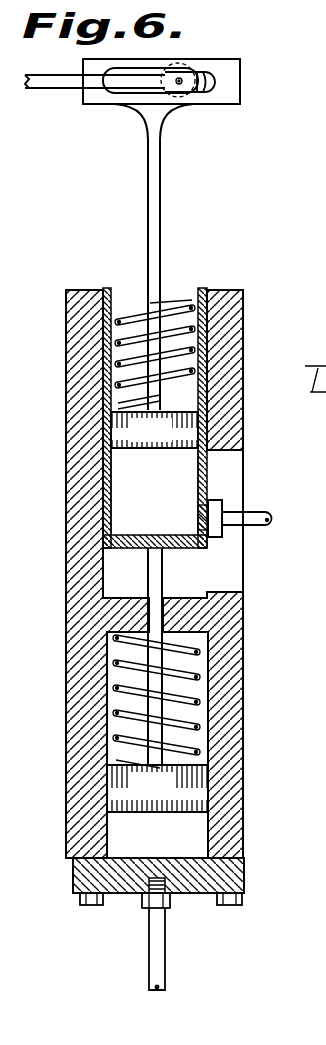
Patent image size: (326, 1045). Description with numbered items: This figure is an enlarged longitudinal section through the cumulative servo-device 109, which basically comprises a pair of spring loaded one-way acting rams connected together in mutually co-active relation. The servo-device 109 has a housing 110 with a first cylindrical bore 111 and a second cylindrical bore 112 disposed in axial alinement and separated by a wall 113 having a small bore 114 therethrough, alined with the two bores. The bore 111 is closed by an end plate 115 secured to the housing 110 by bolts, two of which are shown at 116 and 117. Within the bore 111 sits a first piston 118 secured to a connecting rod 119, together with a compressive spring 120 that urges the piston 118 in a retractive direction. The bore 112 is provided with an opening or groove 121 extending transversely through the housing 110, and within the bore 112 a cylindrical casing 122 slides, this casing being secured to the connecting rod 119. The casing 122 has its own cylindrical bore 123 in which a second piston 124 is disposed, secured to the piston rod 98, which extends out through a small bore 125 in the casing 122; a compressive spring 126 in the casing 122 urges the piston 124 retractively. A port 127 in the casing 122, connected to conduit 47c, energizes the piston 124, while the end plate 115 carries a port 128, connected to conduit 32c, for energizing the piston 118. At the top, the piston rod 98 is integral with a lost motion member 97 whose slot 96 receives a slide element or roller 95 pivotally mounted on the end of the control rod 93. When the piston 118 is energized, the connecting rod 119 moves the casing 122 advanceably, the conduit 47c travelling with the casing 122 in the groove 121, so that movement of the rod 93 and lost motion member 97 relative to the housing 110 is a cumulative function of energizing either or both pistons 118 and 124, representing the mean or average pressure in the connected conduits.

The control rod 93 is at (58, 88).
The slide element or roller 95 is at (193, 103).
The slot 96 is at (242, 80).
The lost motion member 97 is at (245, 52).
The piston rod 98 is at (156, 207).
The cumulative servo-device 109 is at (248, 352).
The housing 110 is at (232, 676).
The first cylindrical bore 111 is at (208, 835).
The second cylindrical bore 112 is at (107, 574).
The wall 113 is at (183, 607).
The small bore 114 is at (110, 612).
The end plate 115 is at (230, 871).
The bolt 116 is at (90, 906).
The bolt 117 is at (228, 906).
The first piston 118 is at (172, 795).
The connecting rod 119 is at (108, 676).
The compressive spring 120 is at (200, 698).
The opening or groove 121 is at (224, 452).
The cylindrical casing 122 is at (199, 470).
The cylindrical bore 123 is at (140, 486).
The second piston 124 is at (172, 441).
The small bore 125 is at (165, 290).
The compressive spring 126 is at (200, 318).
The port 127 is at (198, 518).
The port 128 is at (170, 836).
The conduit 47c is at (258, 518).
The conduit 32c is at (157, 965).